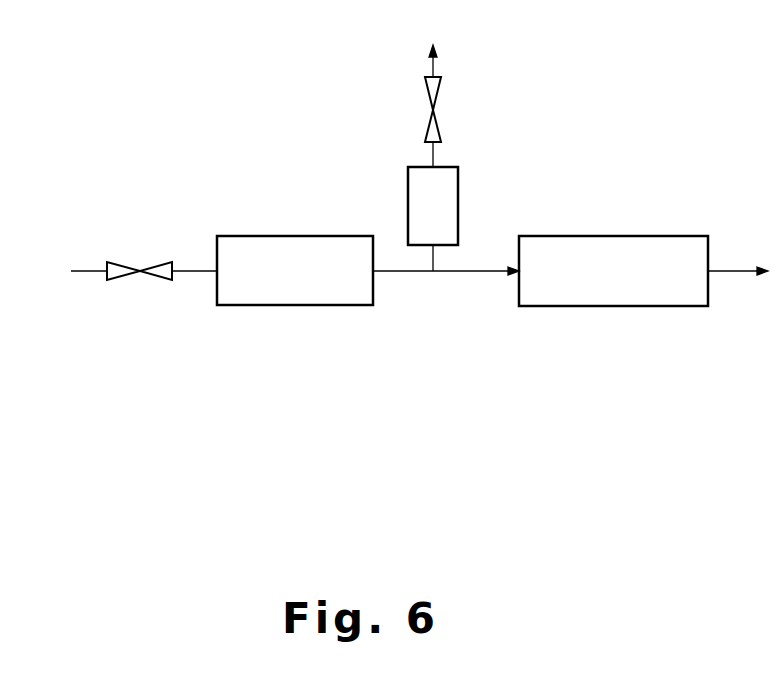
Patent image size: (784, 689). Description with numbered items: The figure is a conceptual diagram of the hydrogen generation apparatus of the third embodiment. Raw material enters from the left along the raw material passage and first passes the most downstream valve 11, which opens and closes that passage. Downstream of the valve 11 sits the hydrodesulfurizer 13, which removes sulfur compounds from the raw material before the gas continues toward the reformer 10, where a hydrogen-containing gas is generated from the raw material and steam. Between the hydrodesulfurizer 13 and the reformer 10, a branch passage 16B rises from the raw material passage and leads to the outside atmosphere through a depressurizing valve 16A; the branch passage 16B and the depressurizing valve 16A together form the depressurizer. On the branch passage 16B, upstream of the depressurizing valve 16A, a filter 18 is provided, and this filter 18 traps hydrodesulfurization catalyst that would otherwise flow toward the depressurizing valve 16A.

The reformer 10 is at (613, 271).
The most downstream valve 11 is at (122, 263).
The hydrodesulfurizer 13 is at (295, 270).
The depressurizing valve 16A is at (440, 92).
The branch passage 16B is at (437, 157).
The filter 18 is at (458, 193).